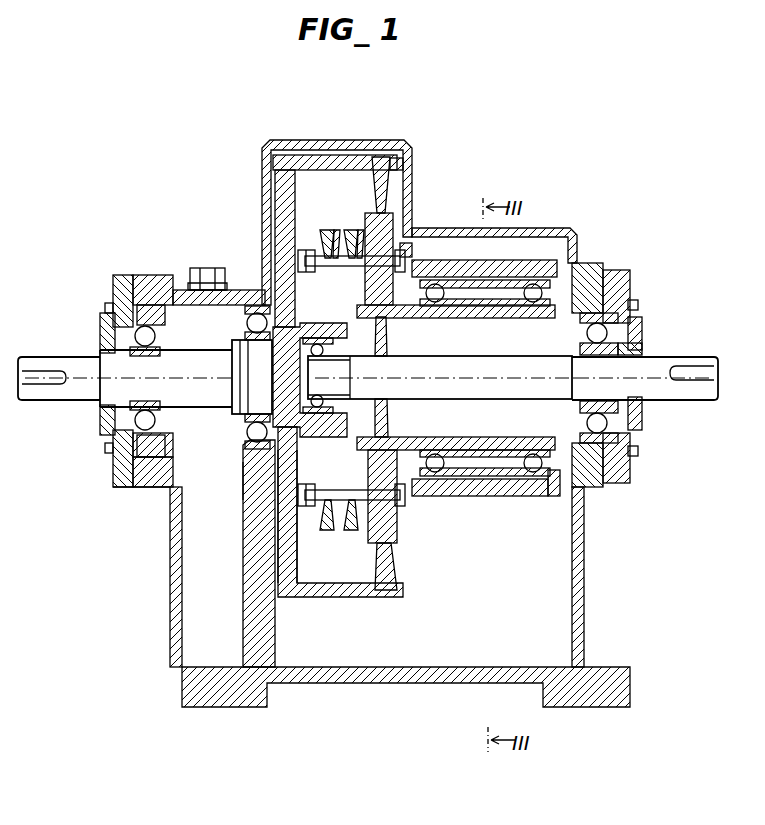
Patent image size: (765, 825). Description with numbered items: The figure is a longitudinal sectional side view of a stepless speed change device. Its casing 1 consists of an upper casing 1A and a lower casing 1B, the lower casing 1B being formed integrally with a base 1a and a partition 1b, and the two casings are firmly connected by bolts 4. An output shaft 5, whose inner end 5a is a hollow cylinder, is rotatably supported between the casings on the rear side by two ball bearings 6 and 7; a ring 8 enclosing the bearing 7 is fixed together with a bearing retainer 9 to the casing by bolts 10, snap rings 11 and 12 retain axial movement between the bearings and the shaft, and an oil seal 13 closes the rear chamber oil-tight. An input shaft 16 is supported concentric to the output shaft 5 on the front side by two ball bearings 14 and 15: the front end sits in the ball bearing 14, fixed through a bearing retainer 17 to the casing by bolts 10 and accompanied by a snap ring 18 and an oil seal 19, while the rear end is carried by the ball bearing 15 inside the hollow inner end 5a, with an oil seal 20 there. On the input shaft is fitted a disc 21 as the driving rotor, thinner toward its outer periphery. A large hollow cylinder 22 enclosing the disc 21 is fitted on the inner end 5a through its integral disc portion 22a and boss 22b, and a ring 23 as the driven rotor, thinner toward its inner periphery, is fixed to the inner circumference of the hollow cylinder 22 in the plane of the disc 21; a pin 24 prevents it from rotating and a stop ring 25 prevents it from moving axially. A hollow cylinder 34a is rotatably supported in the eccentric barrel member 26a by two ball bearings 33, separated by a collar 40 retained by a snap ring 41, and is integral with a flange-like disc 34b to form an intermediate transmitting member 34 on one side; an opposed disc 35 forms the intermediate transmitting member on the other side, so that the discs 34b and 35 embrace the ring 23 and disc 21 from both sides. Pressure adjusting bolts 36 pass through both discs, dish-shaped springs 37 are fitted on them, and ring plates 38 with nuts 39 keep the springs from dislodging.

The casing 1 is at (584, 224).
The upper casing 1A is at (325, 140).
The lower casing 1B is at (584, 610).
The base 1a is at (628, 680).
The partition 1b is at (270, 626).
The bolts 4 is at (205, 268).
The output shaft 5 is at (40, 402).
The inner end 5a is at (243, 500).
The ball bearing 6 is at (246, 446).
The ball bearing 7 is at (115, 470).
The ring 8 is at (148, 275).
The bearing retainer 9 is at (122, 275).
The bolts 10 is at (106, 306).
The snap ring 11 is at (235, 424).
The snap ring 12 is at (103, 425).
The oil seal 13 is at (103, 345).
The ball bearing 14 is at (643, 318).
The ball bearing 15 is at (322, 330).
The input shaft 16 is at (695, 357).
The bearing retainer 17 is at (622, 270).
The snap ring 18 is at (643, 344).
The oil seal 19 is at (640, 402).
The oil seal 20 is at (348, 406).
The disc 21 is at (390, 334).
The hollow cylinder 22 is at (376, 596).
The disc portion 22a is at (280, 560).
The boss 22b is at (340, 438).
The ring 23 is at (392, 210).
The pin 24 is at (376, 157).
The stop ring 25 is at (395, 160).
The eccentric barrel member 26a is at (556, 484).
The ball bearings 33 is at (443, 496).
The intermediate transmitting member 34 is at (406, 546).
The hollow cylinder 34a is at (465, 305).
The flange-like disc 34b is at (412, 240).
The disc 35 is at (302, 158).
The pressure adjusting bolts 36 is at (418, 245).
The dish-shaped springs 37 is at (348, 234).
The ring plates 38 is at (322, 245).
The nuts 39 is at (298, 262).
The collar 40 is at (482, 496).
The snap ring 41 is at (546, 496).